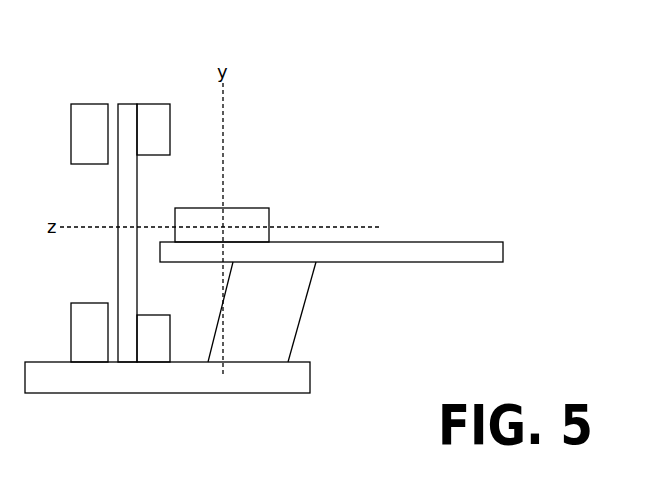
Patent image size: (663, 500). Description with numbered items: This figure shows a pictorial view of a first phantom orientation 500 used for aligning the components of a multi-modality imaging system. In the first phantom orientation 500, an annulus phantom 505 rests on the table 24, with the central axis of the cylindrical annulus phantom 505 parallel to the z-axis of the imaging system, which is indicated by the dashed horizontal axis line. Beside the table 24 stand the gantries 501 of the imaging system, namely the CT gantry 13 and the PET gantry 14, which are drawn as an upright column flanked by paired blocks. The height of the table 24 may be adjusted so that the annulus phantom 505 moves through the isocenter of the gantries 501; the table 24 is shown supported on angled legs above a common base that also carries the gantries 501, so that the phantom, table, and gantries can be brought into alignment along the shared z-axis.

The first phantom orientation 500 is at (462, 68).
The gantries 501 is at (127, 68).
The PET gantry 14 is at (90, 94).
The CT gantry 13 is at (152, 94).
The annulus phantom 505 is at (255, 208).
The table 24 is at (442, 242).